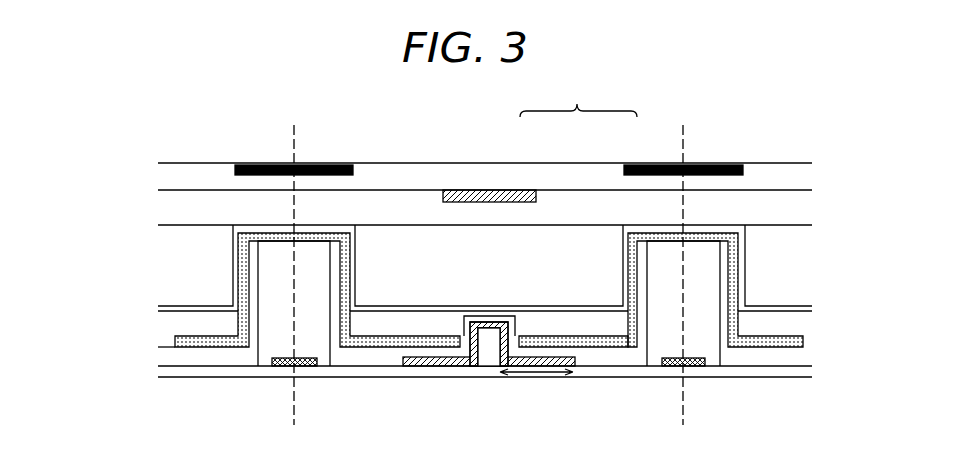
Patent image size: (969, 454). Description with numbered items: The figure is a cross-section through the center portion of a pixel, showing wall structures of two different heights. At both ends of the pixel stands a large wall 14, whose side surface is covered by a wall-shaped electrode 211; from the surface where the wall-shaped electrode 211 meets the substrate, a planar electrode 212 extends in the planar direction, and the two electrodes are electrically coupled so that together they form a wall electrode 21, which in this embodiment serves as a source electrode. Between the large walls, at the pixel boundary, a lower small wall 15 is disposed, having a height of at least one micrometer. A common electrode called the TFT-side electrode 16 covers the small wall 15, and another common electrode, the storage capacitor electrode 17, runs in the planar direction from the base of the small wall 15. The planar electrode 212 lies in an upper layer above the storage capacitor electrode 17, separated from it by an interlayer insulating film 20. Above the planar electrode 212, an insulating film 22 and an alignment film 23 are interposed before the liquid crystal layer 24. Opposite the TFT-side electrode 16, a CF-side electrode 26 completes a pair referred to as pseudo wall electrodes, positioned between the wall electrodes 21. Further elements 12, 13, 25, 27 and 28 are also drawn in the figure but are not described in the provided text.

The substrate 12 is at (366, 372).
The first gate electrode 13 is at (285, 366).
The large wall 14 is at (703, 323).
The small wall 15 is at (493, 350).
The TFT-side electrode 16 is at (485, 320).
The storage capacitor electrode 17 is at (547, 358).
The interlayer insulating film 20 is at (193, 357).
The wall electrode 21 is at (578, 96).
The wall-shaped electrode 211 is at (632, 275).
The planar electrode 212 is at (553, 338).
The insulating film 22 is at (182, 320).
The alignment film 23 is at (237, 278).
The liquid crystal layer 24 is at (388, 242).
The organic light emitting layer 25 is at (182, 208).
The CF-side electrode 26 is at (474, 198).
The counter substrate 27 is at (192, 183).
The light shielding layer 28 is at (260, 162).